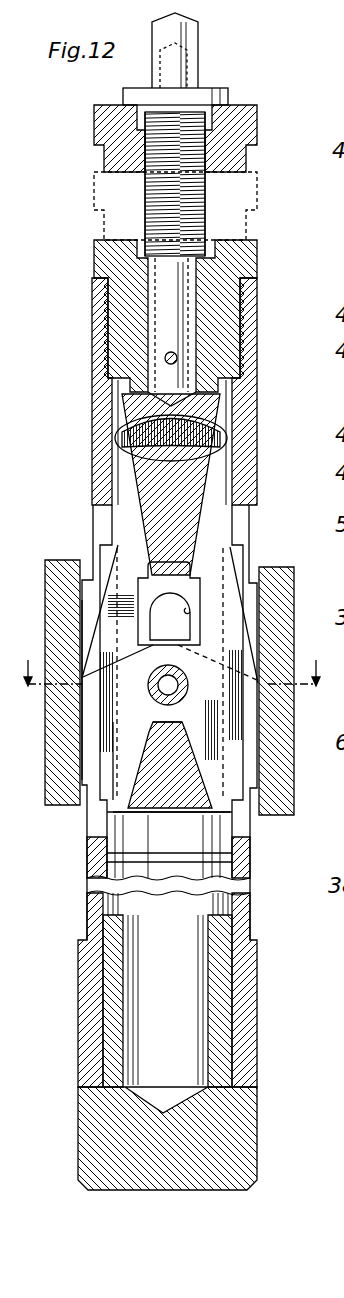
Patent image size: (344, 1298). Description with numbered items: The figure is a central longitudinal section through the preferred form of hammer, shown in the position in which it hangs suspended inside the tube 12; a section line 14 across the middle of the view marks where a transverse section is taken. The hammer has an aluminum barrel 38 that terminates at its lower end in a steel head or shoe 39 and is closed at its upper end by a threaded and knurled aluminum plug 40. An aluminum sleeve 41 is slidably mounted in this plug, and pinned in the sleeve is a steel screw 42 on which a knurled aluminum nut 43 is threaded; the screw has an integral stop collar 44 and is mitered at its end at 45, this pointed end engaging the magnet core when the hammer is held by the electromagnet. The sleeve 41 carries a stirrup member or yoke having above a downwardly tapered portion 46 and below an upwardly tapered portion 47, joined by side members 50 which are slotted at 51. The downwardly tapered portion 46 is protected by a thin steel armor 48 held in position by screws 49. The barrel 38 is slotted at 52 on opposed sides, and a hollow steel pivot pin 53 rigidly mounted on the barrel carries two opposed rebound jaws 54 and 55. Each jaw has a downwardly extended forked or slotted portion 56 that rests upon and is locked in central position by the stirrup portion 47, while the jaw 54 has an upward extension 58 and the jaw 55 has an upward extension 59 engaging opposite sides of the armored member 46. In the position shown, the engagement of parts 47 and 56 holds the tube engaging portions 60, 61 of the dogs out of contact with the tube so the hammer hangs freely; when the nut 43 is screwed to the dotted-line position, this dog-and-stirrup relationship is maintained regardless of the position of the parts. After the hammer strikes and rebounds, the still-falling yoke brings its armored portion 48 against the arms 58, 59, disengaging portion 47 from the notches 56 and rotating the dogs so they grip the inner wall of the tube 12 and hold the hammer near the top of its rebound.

The tube 12 is at (282, 592).
The section line 14- 14 is at (171, 661).
The aluminum barrel 38 is at (243, 975).
The steel head or shoe 39 is at (245, 1105).
The aluminum plug 40 is at (236, 320).
The aluminum sleeve 41 is at (208, 272).
The steel screw 42 is at (172, 325).
The knurled aluminum nut 43 is at (242, 134).
The stop collar 44 is at (228, 93).
The mitered end 45 is at (198, 14).
The downwardly tapered portion 46 is at (170, 497).
The upwardly tapered portion 47 is at (185, 790).
The steel armor 48 is at (208, 528).
The screws 49 is at (115, 437).
The side members 50 is at (188, 588).
The slot 51 is at (188, 613).
The slot 52 is at (98, 507).
The hollow pivot pin 53 is at (188, 685).
The rebound jaw 54 is at (110, 775).
The rebound jaw 55 is at (115, 617).
The forked or slotted portion 56 is at (183, 728).
The upward extension 58 is at (210, 557).
The upward extension 59 is at (135, 557).
The tube engaging portion 60 is at (82, 698).
The tube engaging portion 61 is at (261, 708).